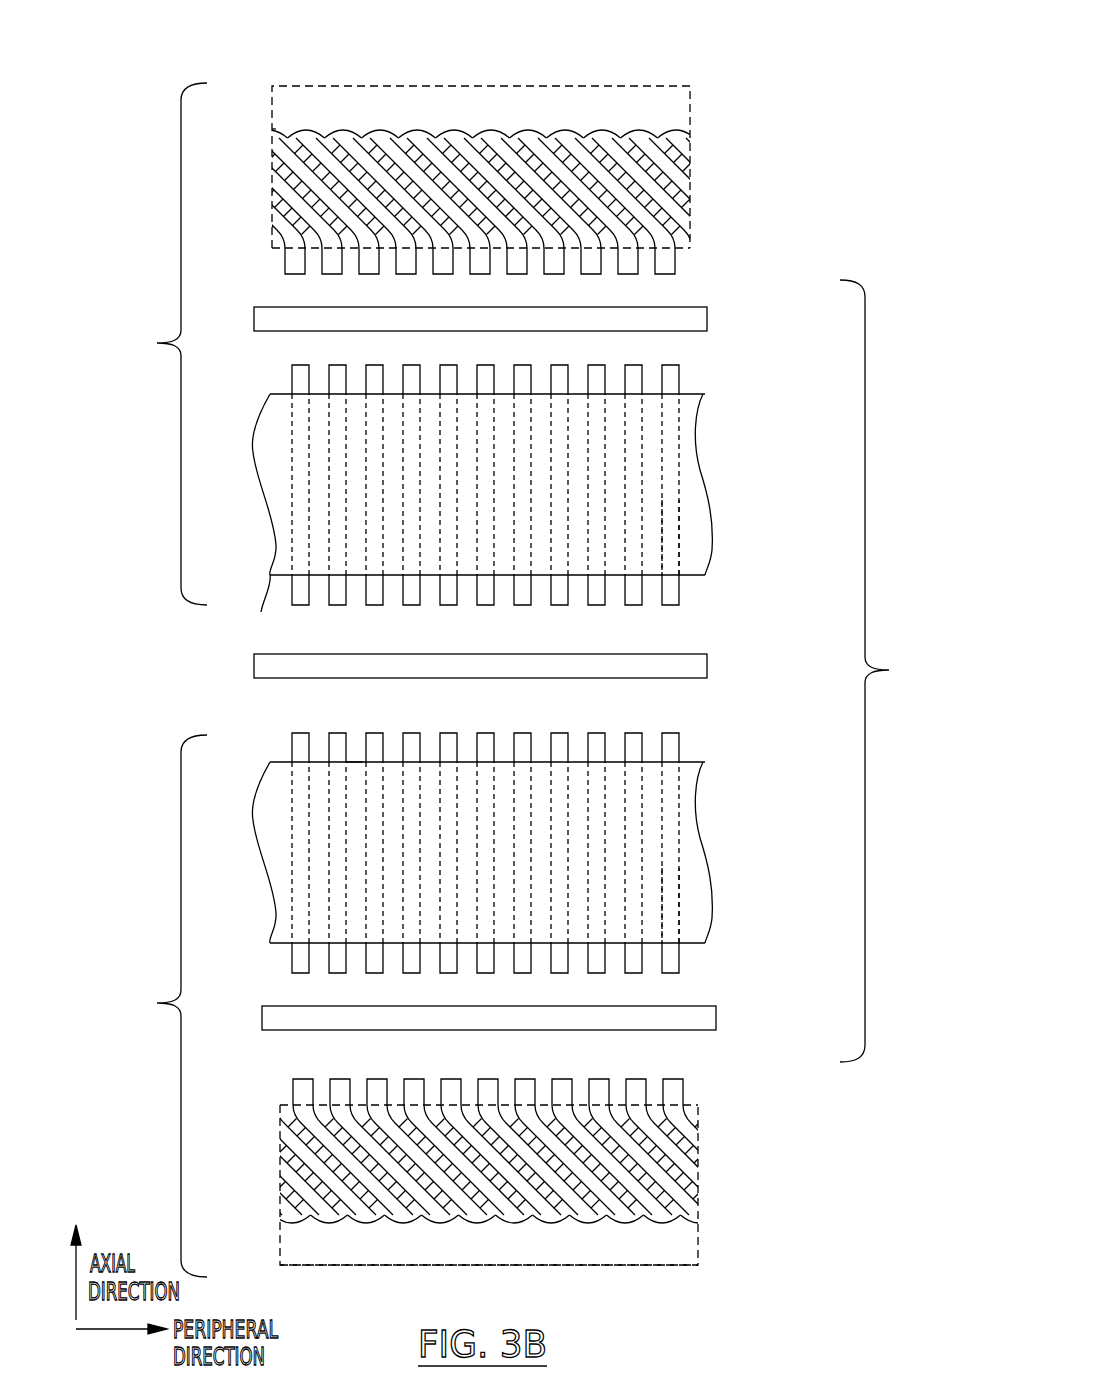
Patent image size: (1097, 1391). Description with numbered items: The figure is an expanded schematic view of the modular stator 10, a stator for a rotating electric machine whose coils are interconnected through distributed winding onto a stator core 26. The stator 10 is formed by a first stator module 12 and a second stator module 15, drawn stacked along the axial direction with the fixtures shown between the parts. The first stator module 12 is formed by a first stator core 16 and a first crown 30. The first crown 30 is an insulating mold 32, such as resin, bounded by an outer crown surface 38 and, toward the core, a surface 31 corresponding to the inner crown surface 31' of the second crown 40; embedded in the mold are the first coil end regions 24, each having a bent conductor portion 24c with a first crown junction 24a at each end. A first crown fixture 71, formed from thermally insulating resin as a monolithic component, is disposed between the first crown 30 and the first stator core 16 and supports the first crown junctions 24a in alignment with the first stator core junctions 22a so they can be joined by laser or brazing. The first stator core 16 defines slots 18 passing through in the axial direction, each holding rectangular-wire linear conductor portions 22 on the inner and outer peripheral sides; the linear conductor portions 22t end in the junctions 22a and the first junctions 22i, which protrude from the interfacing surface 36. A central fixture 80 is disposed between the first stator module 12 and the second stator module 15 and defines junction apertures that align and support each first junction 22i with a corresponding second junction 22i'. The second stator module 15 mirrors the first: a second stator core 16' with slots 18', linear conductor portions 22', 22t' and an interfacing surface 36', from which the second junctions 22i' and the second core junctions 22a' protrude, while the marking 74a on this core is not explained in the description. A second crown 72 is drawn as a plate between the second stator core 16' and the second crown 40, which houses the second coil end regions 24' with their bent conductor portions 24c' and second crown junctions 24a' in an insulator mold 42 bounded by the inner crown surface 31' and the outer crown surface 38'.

The modular stator 10 is at (228, 94).
The first stator module 12 is at (170, 344).
The second stator module 15 is at (170, 1006).
The stator core 26 is at (887, 671).
The first crown 30 is at (752, 65).
The outer crown surface 38 is at (481, 134).
The pad boundary layer 31 is at (481, 277).
The first coil end region 24 is at (482, 144).
The bent conductor portion 24c is at (566, 144).
The insulating mold 32 is at (690, 126).
The first crown junction 24a is at (491, 277).
The first crown fixture 71 is at (707, 318).
The first stator core 16 is at (545, 487).
The slot 18 is at (503, 484).
The interfacing surface 36 is at (264, 519).
The linear conductor portion 22 is at (515, 484).
The linear conductor portion 22t is at (709, 537).
The first stator core junction 22a is at (515, 362).
The first junction 22i is at (515, 609).
The central fixture 80 is at (707, 668).
The second stator core 16' is at (549, 847).
The slot 18' is at (506, 852).
The interfacing surface 36' is at (387, 817).
The connection point 74a is at (358, 762).
The linear conductor portion 22' is at (519, 852).
The linear conductor portion 22t' is at (712, 905).
The second junction 22i' is at (517, 731).
The second core junction 22a' is at (518, 974).
The second crown 72 is at (716, 1018).
The second crown 40 is at (708, 1218).
The insulator mold 42 is at (698, 1250).
The outer crown surface 38' is at (489, 1296).
The inner crown surface 31' is at (489, 1070).
The second coil end region 24' is at (487, 1208).
The bent conductor portion 24c' is at (579, 1208).
The second crown junction 24a' is at (518, 1076).